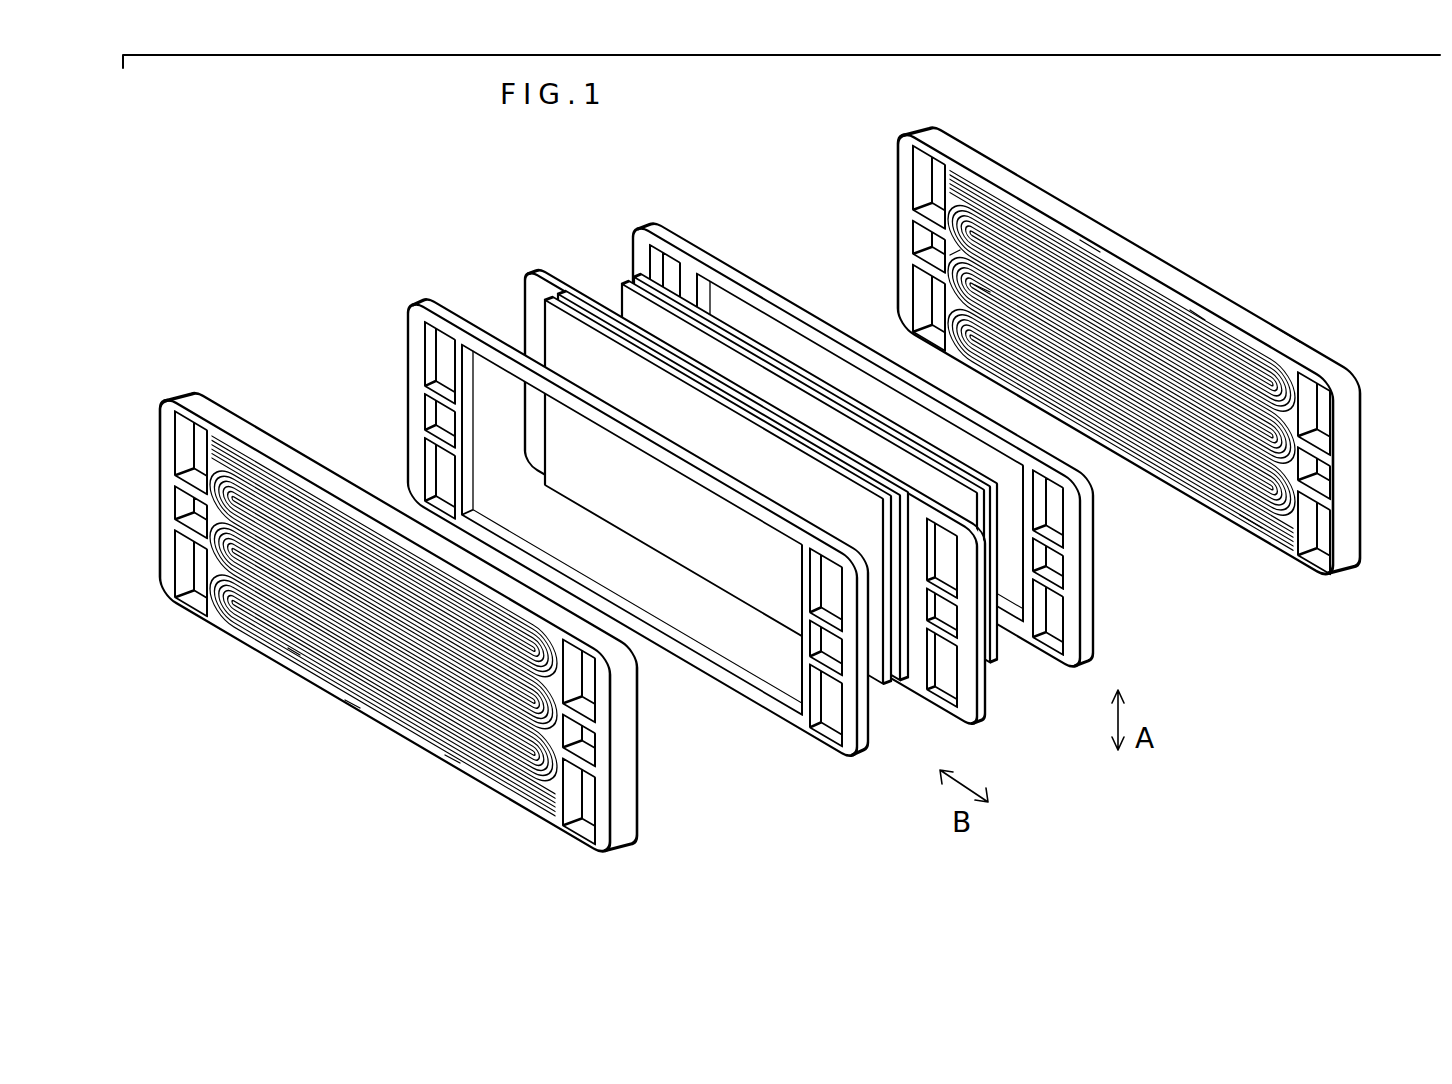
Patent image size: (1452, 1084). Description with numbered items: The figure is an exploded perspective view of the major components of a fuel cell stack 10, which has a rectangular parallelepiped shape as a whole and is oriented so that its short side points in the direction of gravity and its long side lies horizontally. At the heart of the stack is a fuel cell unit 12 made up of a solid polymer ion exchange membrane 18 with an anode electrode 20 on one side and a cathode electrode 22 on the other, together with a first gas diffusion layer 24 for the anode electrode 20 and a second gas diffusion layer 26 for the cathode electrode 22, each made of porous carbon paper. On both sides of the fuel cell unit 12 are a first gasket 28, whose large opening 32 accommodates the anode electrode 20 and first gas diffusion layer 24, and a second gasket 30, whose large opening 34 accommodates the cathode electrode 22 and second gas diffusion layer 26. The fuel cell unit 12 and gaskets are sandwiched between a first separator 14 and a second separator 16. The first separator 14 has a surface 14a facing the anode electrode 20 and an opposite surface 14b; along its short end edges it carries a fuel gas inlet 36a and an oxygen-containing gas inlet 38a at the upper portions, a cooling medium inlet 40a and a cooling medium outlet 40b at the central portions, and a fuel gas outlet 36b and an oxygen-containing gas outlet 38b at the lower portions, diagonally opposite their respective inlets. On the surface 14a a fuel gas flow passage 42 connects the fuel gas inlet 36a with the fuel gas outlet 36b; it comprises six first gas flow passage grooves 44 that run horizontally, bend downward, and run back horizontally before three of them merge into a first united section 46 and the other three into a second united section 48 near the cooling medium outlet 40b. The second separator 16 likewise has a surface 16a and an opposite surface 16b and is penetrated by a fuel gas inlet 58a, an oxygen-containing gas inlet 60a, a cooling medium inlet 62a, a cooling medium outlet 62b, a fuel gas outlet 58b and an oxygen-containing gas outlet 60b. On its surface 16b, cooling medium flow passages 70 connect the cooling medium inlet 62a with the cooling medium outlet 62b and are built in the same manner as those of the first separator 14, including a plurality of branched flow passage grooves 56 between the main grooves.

The fuel cell stack 10 is at (753, 115).
The fuel cell unit 12 is at (780, 459).
The first separator 14 is at (1121, 342).
The second separator 16 is at (433, 596).
The solid polymer ion exchange membrane 18 is at (968, 676).
The anode electrode 20 is at (627, 287).
The cathode electrode 22 is at (903, 658).
The first gas diffusion layer 24 is at (706, 315).
The second gas diffusion layer 26 is at (676, 562).
The first gasket 28 is at (893, 417).
The second gasket 30 is at (638, 508).
The large opening 32 is at (1048, 562).
The large opening 34 is at (826, 647).
The fuel gas inlet 36a is at (928, 180).
The fuel gas outlet 36b is at (1322, 527).
The oxygen-containing gas inlet 38a is at (1322, 418).
The oxygen-containing gas outlet 38b is at (940, 290).
The cooling medium inlet 40a is at (1325, 470).
The cooling medium outlet 40b is at (936, 232).
The fuel gas flow passage 42 is at (1198, 318).
The first gas flow passage grooves 44 is at (1090, 250).
The first united section 46 is at (985, 288).
The second united section 48 is at (944, 258).
The surface 14a is at (1250, 520).
The surface 14b is at (1290, 335).
The surface 16a is at (452, 758).
The surface 16b is at (355, 704).
The branched flow passage grooves 56 is at (295, 650).
The fuel gas inlet 58a is at (187, 430).
The fuel gas outlet 58b is at (590, 775).
The oxygen-containing gas inlet 60a is at (590, 670).
The oxygen-containing gas outlet 60b is at (205, 562).
The cooling medium inlet 62a is at (590, 720).
The cooling medium outlet 62b is at (180, 560).
The cooling medium flow passages 70 is at (297, 495).